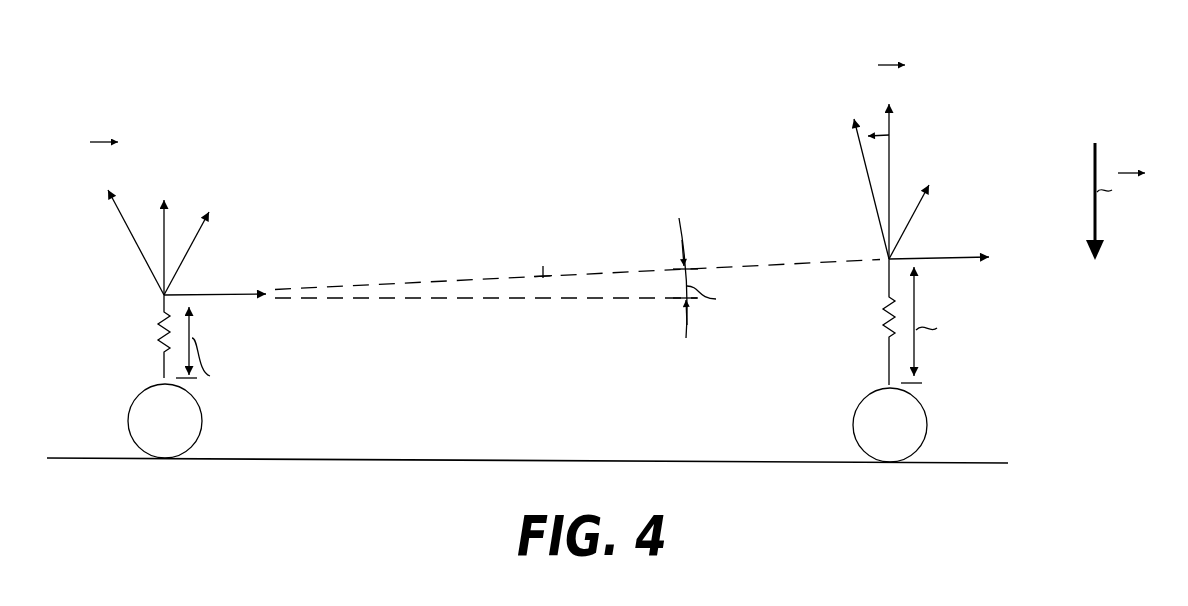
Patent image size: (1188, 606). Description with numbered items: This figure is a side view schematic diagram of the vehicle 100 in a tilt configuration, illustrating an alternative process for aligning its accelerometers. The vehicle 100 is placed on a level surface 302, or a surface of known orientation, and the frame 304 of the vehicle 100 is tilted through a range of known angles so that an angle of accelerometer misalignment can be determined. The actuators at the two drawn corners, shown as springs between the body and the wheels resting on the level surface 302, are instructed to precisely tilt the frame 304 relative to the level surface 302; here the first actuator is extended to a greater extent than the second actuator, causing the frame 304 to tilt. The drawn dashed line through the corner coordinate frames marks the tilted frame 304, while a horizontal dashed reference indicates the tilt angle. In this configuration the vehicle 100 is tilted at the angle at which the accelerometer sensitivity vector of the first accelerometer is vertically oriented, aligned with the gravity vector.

The vehicle 100 is at (124, 113).
The level surface 302 is at (382, 461).
The frame 304 is at (542, 254).